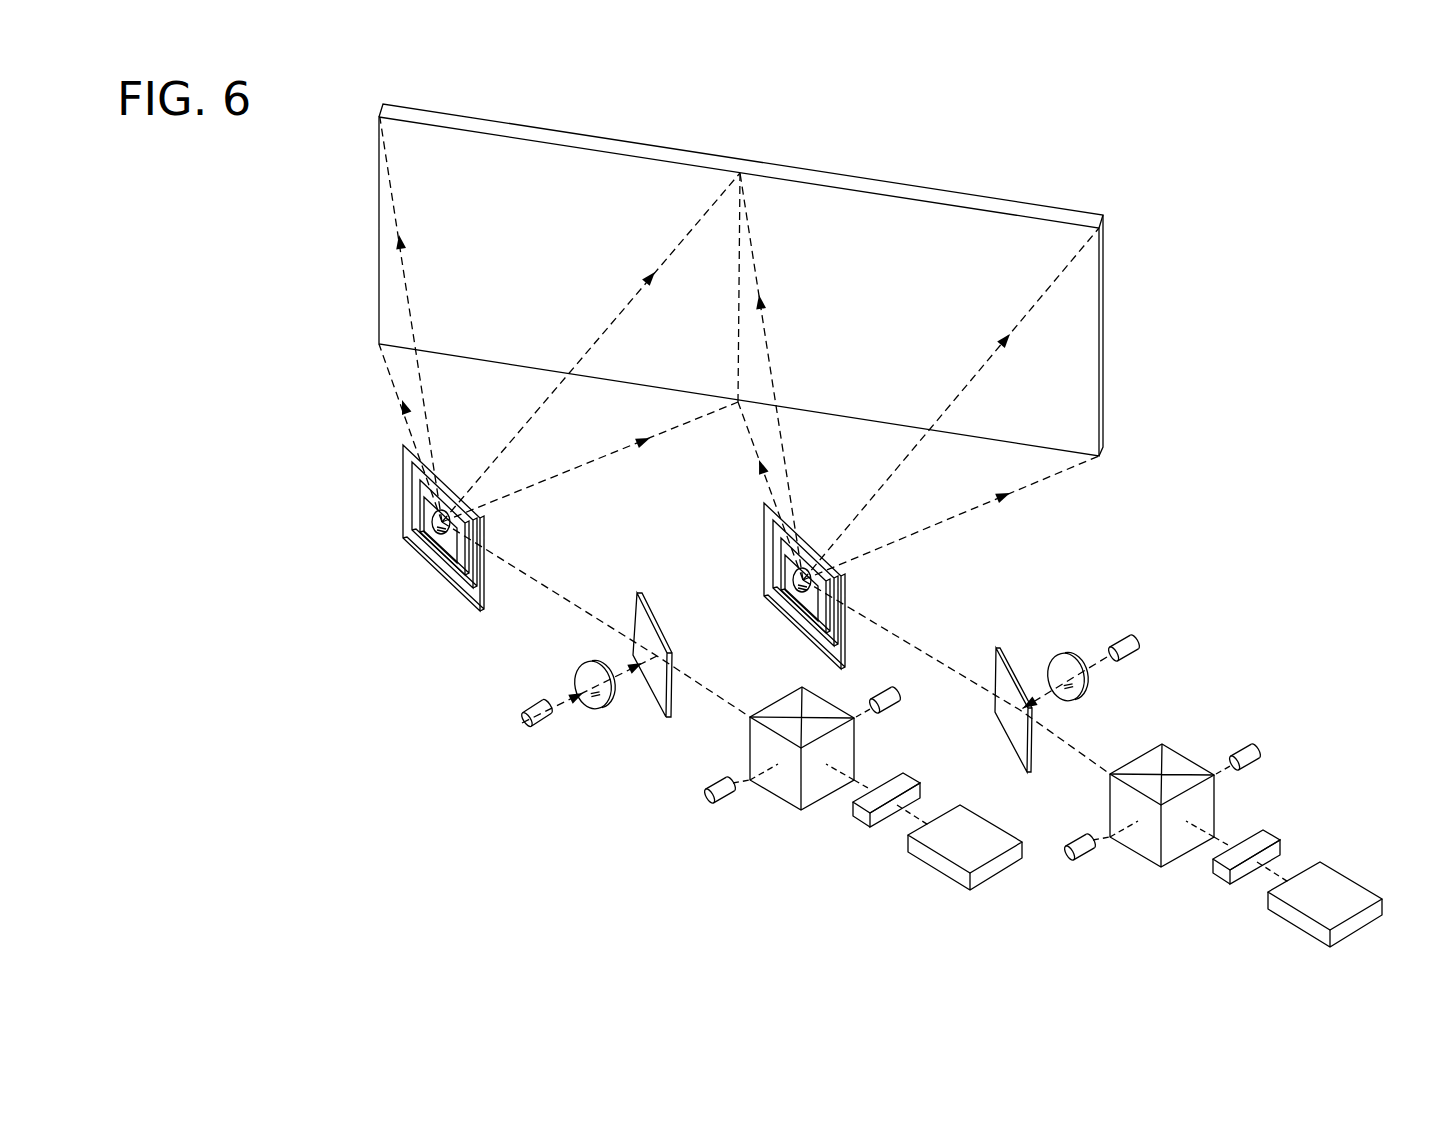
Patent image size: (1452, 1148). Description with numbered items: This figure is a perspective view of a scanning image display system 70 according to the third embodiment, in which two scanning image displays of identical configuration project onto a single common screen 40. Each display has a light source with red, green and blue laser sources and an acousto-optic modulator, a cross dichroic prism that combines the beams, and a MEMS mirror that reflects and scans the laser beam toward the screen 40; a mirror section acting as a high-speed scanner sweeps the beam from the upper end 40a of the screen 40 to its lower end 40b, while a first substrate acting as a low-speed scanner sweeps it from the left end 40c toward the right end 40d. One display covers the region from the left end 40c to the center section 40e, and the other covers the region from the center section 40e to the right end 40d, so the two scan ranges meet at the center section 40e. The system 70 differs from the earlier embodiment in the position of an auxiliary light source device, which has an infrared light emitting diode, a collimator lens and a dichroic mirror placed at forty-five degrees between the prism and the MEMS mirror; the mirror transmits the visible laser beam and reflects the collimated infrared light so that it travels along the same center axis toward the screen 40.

The scanning image display system 70 is at (1210, 140).
The screen 40 is at (1104, 330).
The upper end of the screen 40a is at (602, 140).
The lower end of the screen 40b is at (602, 377).
The left end of the screen 40c is at (378, 232).
The right end of the screen 40d is at (1103, 390).
The center section of the screen 40e is at (728, 222).